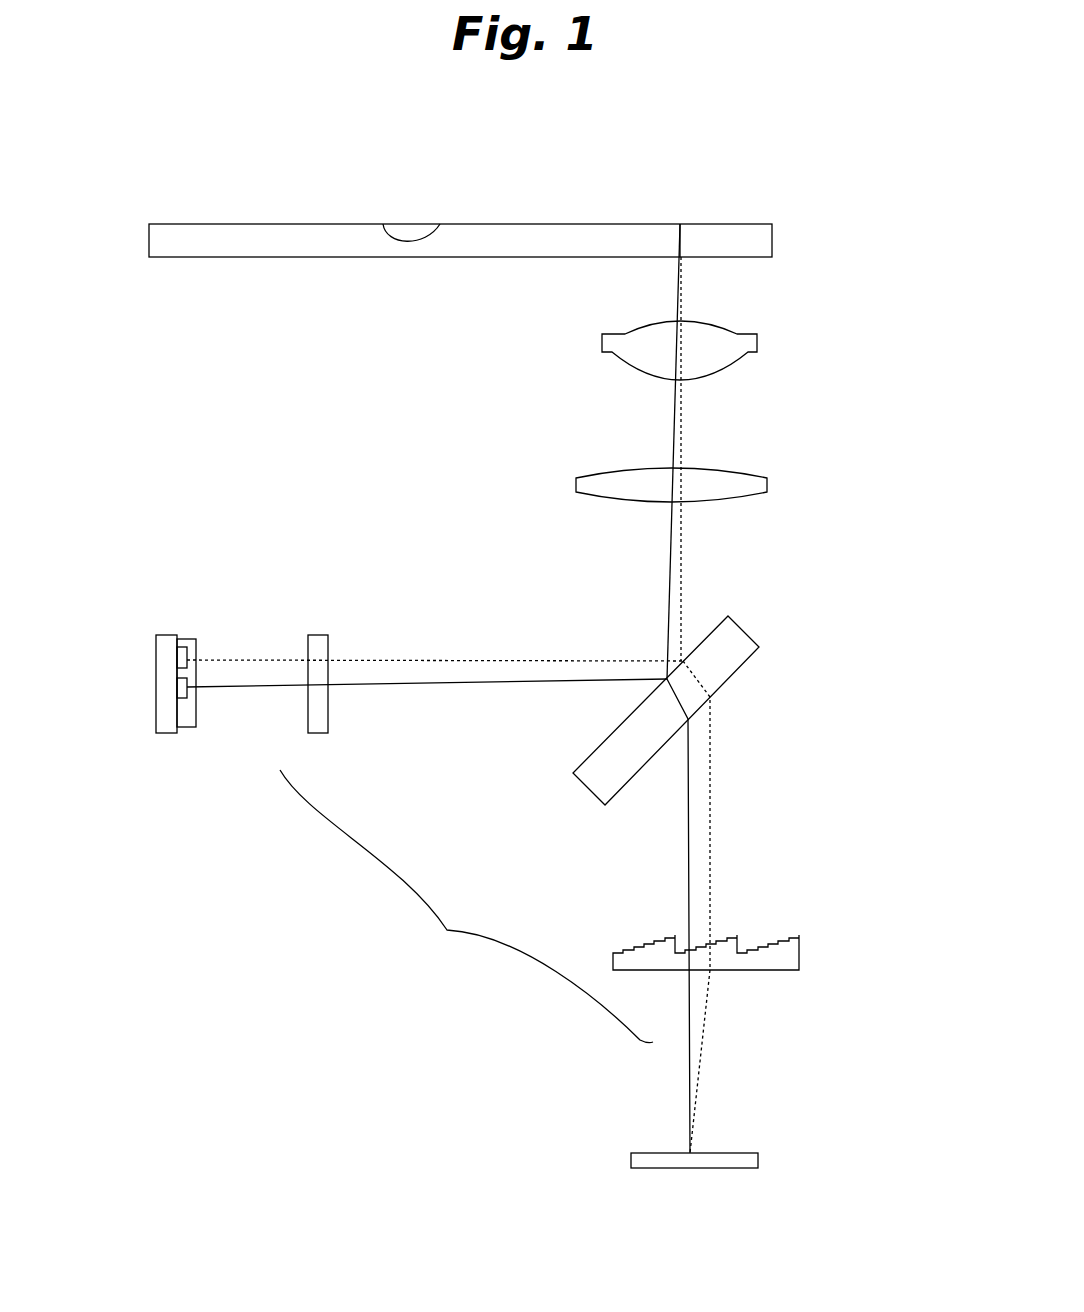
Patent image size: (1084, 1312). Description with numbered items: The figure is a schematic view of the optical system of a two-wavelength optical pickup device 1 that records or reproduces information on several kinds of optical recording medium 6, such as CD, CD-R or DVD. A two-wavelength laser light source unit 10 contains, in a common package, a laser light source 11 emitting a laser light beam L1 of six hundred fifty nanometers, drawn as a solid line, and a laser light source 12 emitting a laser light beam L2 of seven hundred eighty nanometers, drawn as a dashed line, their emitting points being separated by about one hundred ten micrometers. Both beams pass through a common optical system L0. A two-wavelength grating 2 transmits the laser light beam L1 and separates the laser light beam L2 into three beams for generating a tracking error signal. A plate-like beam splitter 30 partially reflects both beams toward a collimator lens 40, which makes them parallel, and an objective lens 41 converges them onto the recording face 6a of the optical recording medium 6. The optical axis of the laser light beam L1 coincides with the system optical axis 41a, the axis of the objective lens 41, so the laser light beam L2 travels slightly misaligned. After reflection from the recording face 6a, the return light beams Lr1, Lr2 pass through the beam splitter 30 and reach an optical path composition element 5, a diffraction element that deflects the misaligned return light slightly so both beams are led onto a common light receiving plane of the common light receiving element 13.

The optical pickup device 1 is at (816, 536).
The two-wavelength grating 2 is at (318, 733).
The optical path composition element 5 is at (800, 956).
The optical recording medium 6 is at (745, 224).
The recording face 6a is at (383, 224).
The two-wavelength laser light source unit 10 is at (156, 677).
The laser light source 11 is at (196, 713).
The laser light source 12 is at (190, 642).
The common light receiving element 13 is at (758, 1160).
The plate-like beam splitter 30 is at (757, 642).
The collimator lens 40 is at (767, 483).
The objective lens 41 is at (757, 340).
The system optical axis 41a is at (673, 413).
The common optical system L0 is at (466, 906).
The laser light beam L1 is at (253, 687).
The laser light beam L2 is at (285, 659).
The return light beam Lr1 is at (690, 845).
The return light beam Lr2 is at (712, 856).